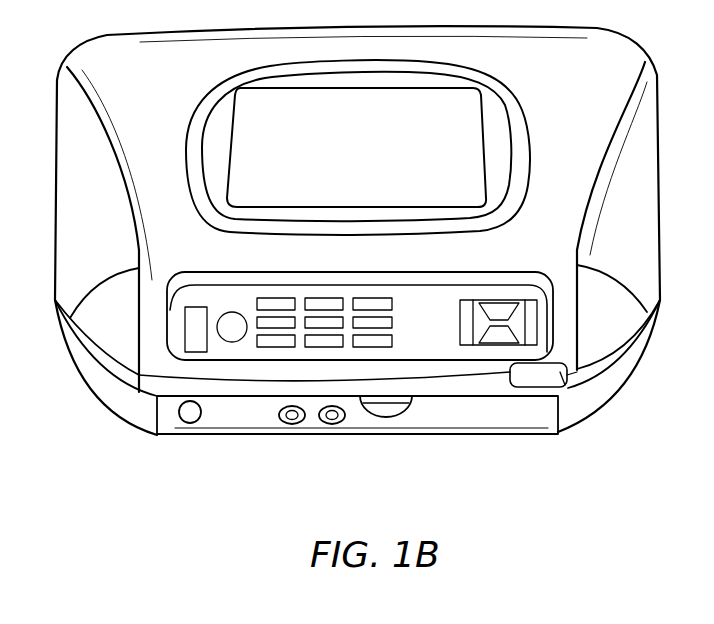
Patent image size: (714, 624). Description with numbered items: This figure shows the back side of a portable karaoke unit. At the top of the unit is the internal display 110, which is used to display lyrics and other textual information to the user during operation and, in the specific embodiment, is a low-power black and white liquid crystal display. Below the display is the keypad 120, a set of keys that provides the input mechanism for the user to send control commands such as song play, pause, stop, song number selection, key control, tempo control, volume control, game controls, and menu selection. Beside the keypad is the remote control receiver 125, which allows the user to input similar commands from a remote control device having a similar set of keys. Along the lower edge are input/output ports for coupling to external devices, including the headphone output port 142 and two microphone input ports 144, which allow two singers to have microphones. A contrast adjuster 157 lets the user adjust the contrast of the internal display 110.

The internal display 110 is at (462, 112).
The keypad 120 is at (238, 293).
The remote control receiver 125 is at (558, 376).
The headphone output port 142 is at (188, 420).
The microphone input ports 144 is at (292, 420).
The contrast adjuster 157 is at (405, 415).